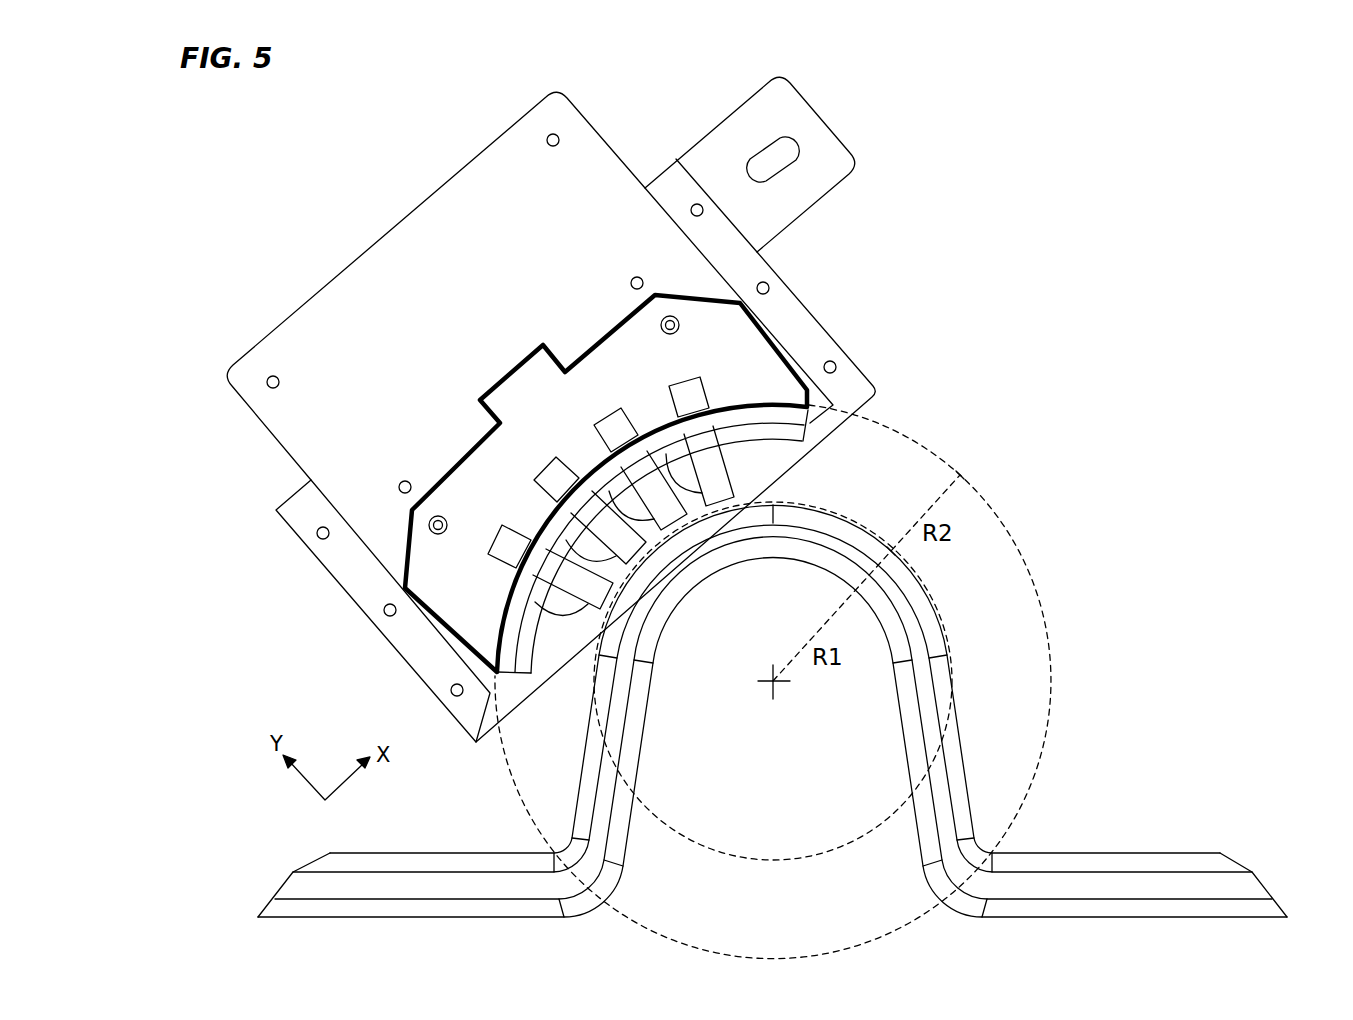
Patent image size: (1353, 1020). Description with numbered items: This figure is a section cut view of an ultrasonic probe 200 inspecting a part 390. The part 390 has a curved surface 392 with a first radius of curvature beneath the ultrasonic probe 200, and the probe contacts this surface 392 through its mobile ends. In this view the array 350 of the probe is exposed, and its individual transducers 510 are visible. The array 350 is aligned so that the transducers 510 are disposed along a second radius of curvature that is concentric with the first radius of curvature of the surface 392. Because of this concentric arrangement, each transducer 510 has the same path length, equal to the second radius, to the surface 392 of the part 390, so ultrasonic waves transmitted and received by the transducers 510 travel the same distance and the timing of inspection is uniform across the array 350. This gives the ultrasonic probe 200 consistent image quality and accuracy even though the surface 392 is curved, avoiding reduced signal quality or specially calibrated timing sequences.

The ultrasonic probe 200 is at (932, 233).
The array 350 is at (465, 458).
The transducer 510 is at (505, 555).
The part 390 is at (1120, 852).
The surface 392 is at (829, 508).